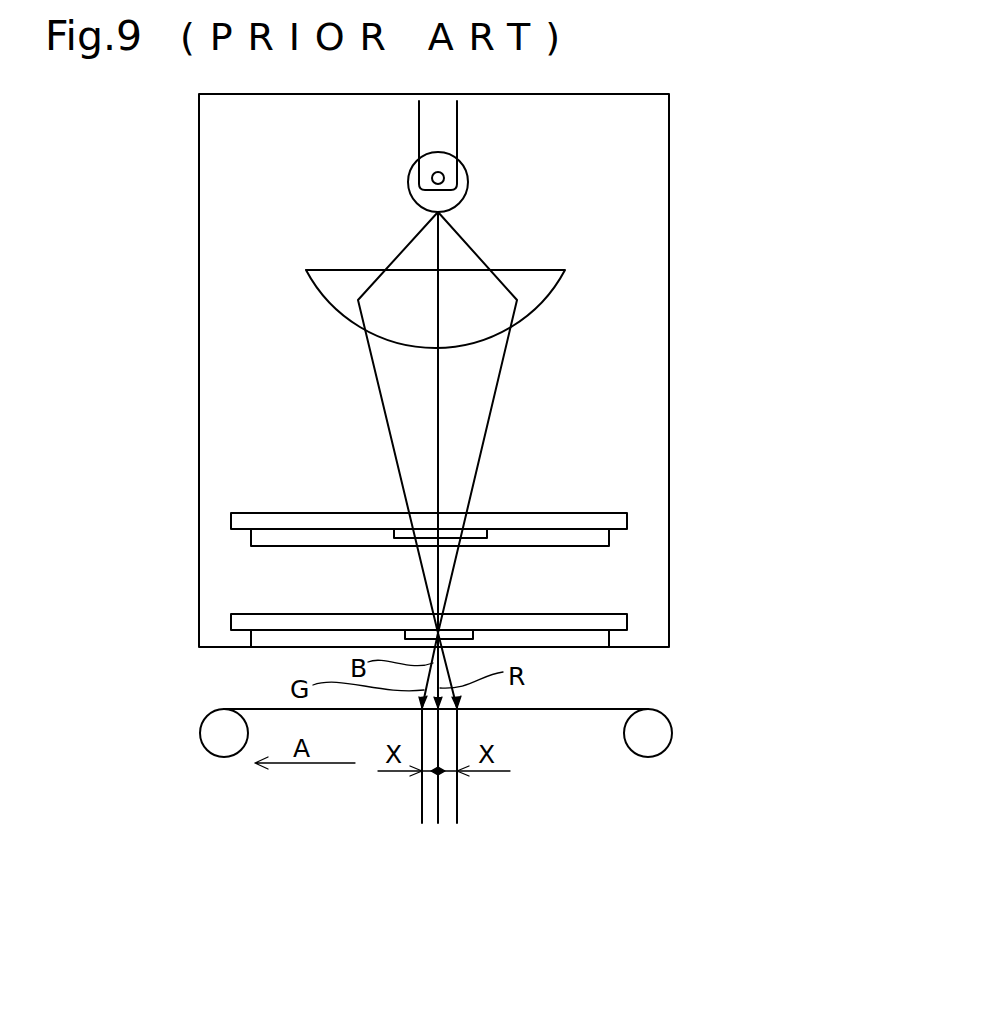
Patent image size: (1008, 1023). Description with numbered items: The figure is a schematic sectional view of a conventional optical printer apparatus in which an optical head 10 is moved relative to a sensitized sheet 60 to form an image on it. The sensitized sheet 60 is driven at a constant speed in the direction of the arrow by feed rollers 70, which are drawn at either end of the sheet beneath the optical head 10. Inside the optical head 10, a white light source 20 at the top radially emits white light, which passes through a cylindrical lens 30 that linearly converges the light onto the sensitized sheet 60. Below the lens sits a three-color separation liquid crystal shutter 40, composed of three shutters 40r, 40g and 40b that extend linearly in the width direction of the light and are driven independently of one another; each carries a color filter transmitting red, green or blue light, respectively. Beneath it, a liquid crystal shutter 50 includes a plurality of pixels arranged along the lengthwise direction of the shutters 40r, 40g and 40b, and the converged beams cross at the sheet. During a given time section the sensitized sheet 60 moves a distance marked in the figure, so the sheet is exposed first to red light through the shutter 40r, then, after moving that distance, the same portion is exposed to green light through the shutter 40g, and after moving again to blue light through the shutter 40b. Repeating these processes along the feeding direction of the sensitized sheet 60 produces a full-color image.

The optical head 10 is at (669, 160).
The white light source 20 is at (466, 178).
The cylindrical lens 30 is at (547, 277).
The three-color separation liquid crystal shutter 40 is at (485, 478).
The shutter 40r is at (403, 528).
The shutter 40g is at (453, 530).
The shutter 40b is at (480, 528).
The liquid crystal shutter 50 is at (615, 620).
The sensitized sheet 60 is at (590, 709).
The feed rollers 70 is at (220, 747).